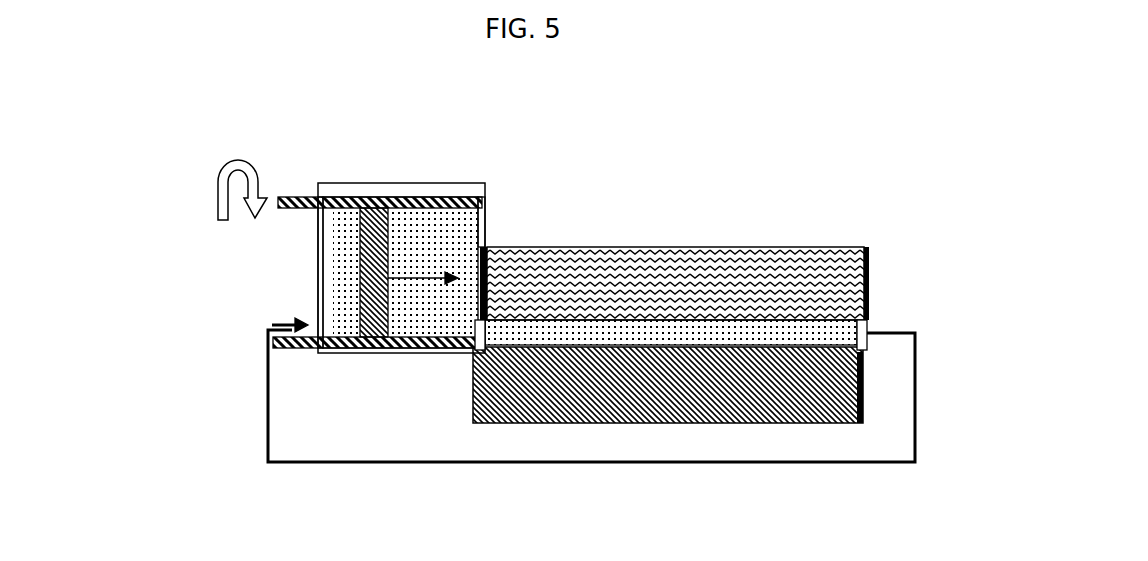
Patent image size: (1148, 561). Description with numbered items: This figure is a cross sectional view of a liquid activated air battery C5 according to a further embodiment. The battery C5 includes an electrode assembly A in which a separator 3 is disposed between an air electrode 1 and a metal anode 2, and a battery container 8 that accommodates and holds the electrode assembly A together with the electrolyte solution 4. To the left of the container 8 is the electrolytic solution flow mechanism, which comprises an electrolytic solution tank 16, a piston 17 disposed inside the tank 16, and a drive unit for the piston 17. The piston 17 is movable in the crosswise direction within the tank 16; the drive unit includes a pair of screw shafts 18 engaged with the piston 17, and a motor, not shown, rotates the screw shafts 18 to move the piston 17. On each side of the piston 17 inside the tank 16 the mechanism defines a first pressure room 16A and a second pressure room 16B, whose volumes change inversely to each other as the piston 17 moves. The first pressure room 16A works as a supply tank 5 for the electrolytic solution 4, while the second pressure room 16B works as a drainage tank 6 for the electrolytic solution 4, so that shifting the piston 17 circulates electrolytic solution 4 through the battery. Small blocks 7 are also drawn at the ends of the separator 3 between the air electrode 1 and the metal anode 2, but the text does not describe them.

The air electrode 1 is at (702, 260).
The metal anode 2 is at (633, 407).
The separator 3 is at (758, 343).
The electrolyte solution 4 is at (412, 337).
The supply tank 5 is at (493, 208).
The drainage tank 6 is at (314, 298).
The insulating spacer 7 is at (473, 352).
The battery container 8 is at (868, 258).
The electrolytic solution tank 16 is at (445, 186).
The first pressure room 16A is at (541, 224).
The second pressure room 16B is at (237, 305).
The piston 17 is at (375, 208).
The screw shafts 18 is at (300, 212).
The electrode assembly A is at (850, 247).
The liquid activated air battery C5 is at (790, 212).